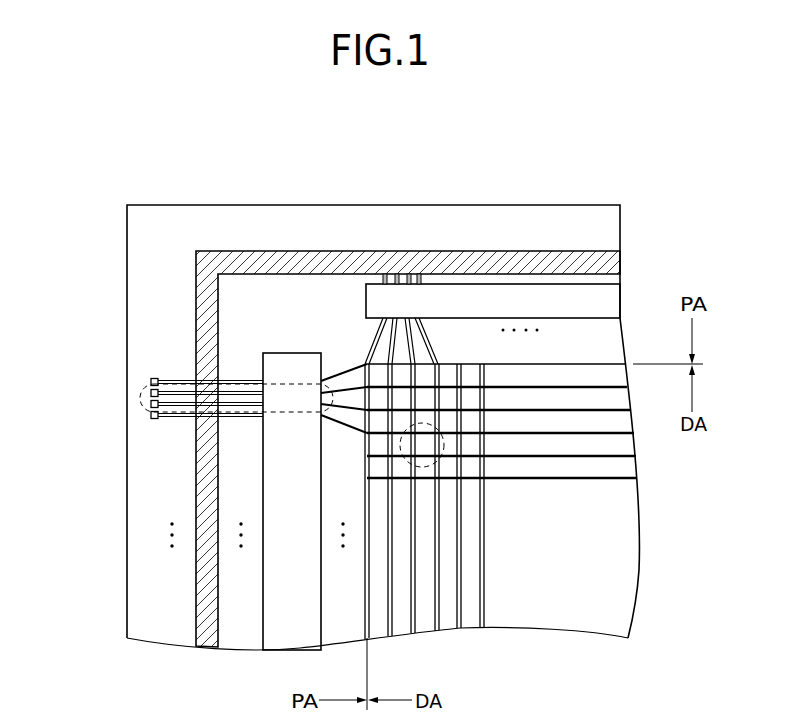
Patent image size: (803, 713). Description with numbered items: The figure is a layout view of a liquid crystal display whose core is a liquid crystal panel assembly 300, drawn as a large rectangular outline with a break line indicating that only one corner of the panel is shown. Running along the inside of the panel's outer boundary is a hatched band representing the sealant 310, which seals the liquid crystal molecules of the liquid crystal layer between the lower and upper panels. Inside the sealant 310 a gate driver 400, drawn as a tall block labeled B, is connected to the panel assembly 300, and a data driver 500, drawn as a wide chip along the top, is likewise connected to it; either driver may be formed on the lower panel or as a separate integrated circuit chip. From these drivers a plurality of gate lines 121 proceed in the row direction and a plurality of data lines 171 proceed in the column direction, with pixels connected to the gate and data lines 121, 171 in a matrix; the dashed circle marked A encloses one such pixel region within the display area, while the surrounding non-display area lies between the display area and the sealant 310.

The liquid crystal panel assembly 300 is at (121, 237).
The sealant 310 is at (196, 303).
The gate driver 400 is at (256, 476).
The data driver 500 is at (556, 278).
The gate lines 121 is at (642, 364).
The data lines 171 is at (628, 648).
The pixel region A is at (456, 448).